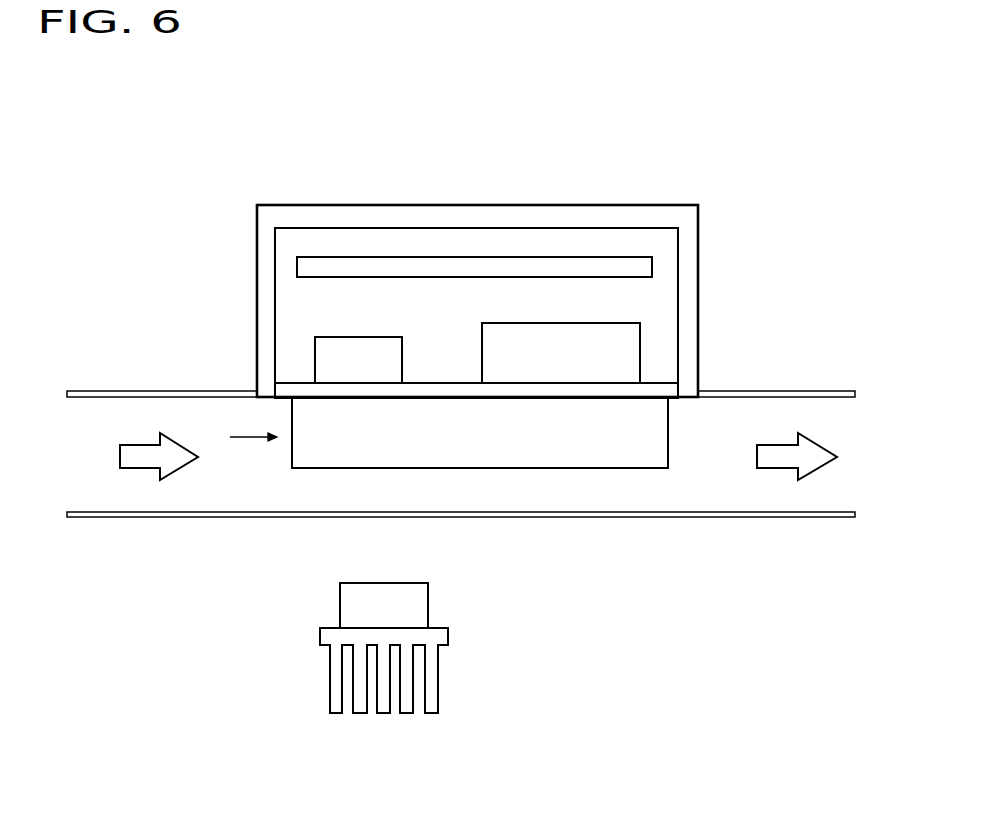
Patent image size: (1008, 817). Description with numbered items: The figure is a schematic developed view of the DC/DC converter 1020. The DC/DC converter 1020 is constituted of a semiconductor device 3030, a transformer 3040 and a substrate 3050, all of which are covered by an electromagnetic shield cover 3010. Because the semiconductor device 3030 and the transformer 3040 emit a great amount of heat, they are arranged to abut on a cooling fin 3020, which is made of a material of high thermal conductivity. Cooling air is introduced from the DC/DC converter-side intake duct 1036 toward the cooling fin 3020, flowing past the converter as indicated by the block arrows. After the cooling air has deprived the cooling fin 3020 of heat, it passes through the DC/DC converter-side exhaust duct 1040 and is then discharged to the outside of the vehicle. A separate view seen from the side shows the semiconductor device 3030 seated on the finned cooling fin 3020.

The DC/DC converter 1020 is at (535, 158).
The electromagnetic shield cover 3010 is at (348, 205).
The cooling fin 3020 is at (402, 468).
The semiconductor device 3030 is at (357, 337).
The transformer 3040 is at (522, 323).
The substrate 3050 is at (455, 277).
The DC/DC converter-side intake duct 1036 is at (93, 478).
The DC/DC converter-side exhaust duct 1040 is at (848, 478).